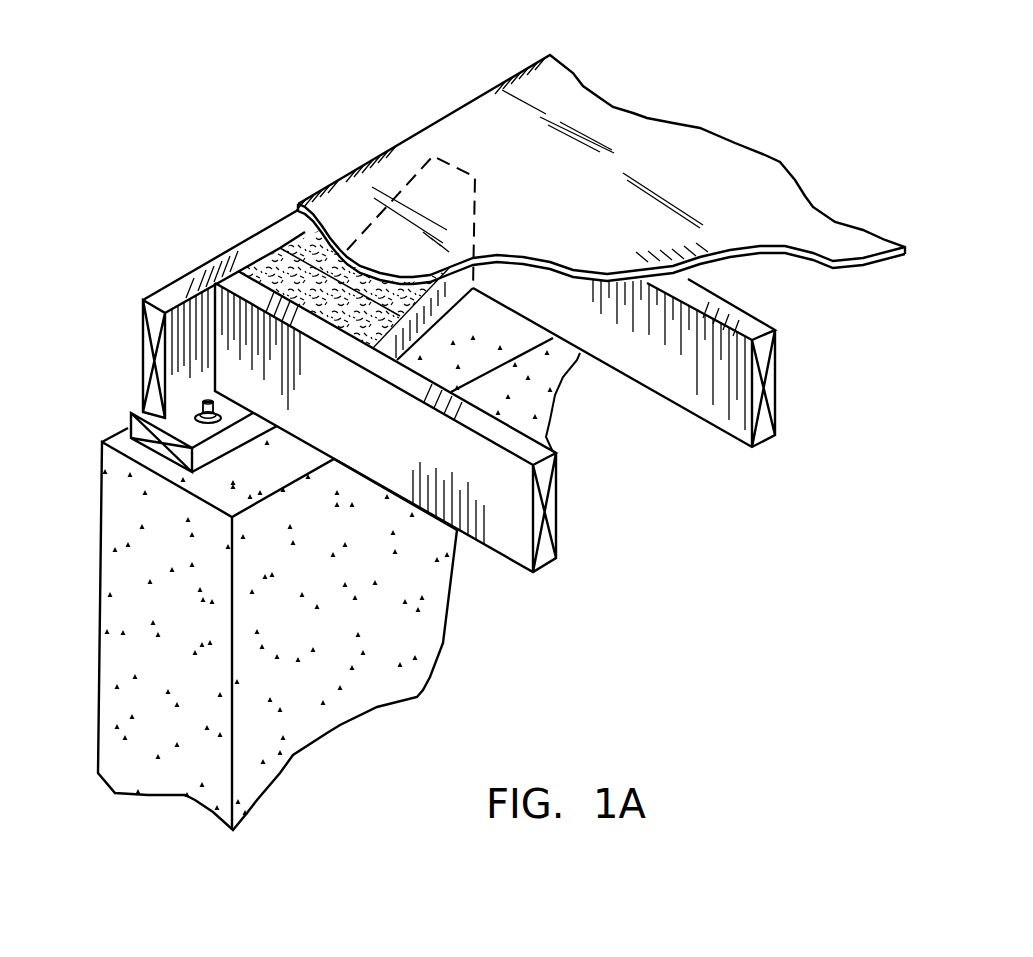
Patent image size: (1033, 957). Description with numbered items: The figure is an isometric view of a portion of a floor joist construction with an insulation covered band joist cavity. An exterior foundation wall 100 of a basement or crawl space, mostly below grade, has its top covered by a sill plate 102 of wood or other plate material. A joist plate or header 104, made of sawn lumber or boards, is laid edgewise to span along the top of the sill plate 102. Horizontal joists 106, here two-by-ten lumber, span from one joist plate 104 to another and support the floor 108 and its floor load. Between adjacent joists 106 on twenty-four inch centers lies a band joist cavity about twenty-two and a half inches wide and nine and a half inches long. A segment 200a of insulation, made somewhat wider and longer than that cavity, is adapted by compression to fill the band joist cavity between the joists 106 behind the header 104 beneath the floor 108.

The exterior foundation wall 100 is at (118, 432).
The sill plate 102 is at (130, 412).
The joist plate or header 104 is at (203, 257).
The joist 106 is at (510, 532).
The floor 108 is at (362, 163).
The segment 200a is at (285, 256).